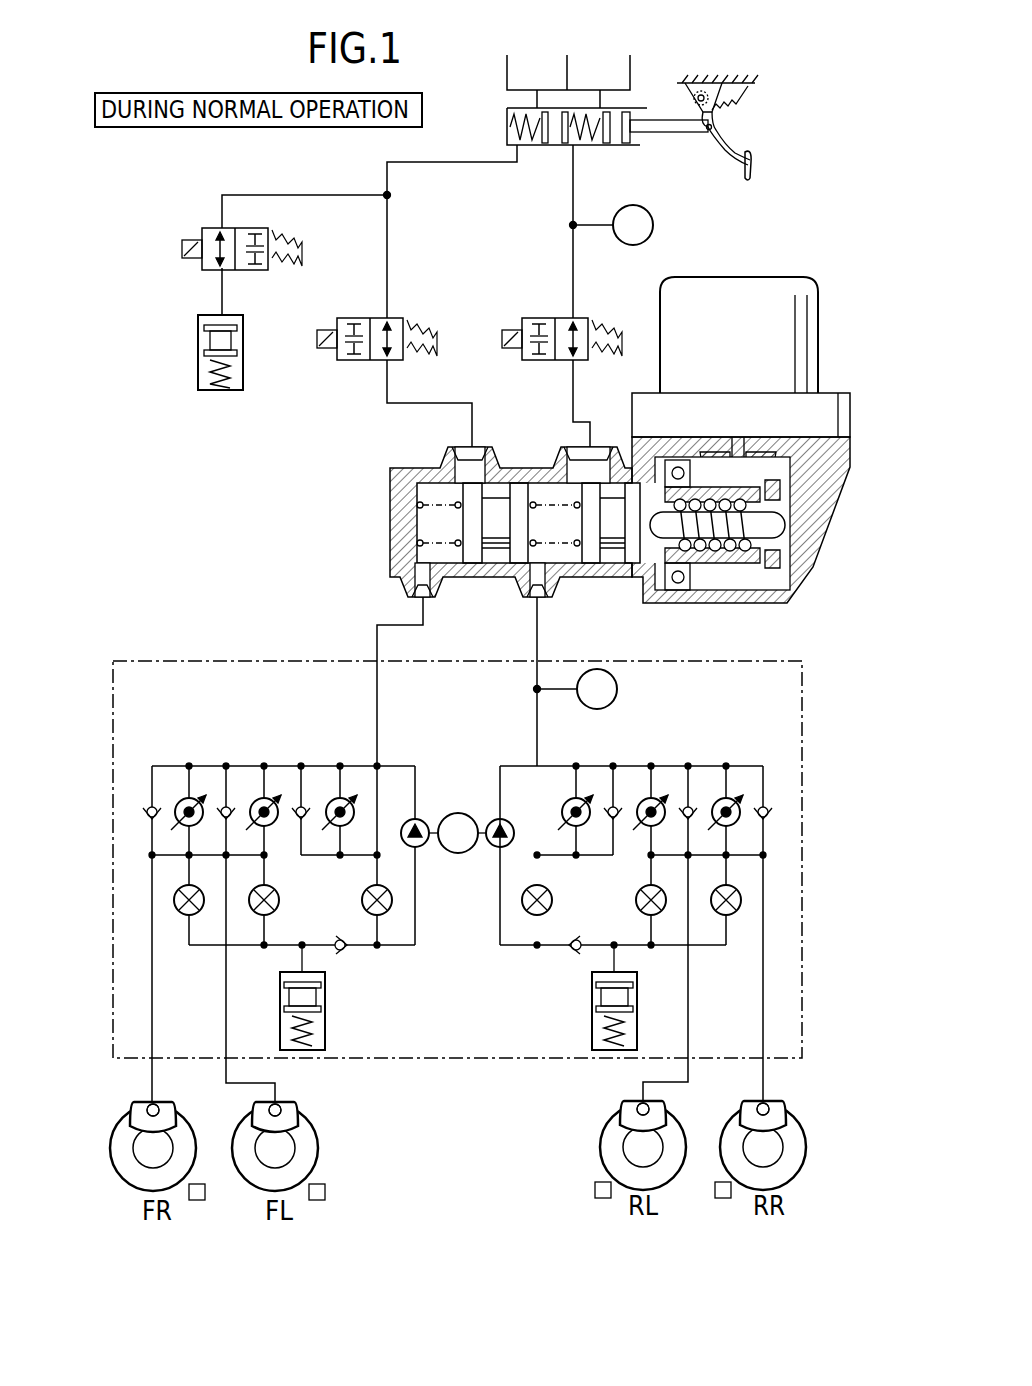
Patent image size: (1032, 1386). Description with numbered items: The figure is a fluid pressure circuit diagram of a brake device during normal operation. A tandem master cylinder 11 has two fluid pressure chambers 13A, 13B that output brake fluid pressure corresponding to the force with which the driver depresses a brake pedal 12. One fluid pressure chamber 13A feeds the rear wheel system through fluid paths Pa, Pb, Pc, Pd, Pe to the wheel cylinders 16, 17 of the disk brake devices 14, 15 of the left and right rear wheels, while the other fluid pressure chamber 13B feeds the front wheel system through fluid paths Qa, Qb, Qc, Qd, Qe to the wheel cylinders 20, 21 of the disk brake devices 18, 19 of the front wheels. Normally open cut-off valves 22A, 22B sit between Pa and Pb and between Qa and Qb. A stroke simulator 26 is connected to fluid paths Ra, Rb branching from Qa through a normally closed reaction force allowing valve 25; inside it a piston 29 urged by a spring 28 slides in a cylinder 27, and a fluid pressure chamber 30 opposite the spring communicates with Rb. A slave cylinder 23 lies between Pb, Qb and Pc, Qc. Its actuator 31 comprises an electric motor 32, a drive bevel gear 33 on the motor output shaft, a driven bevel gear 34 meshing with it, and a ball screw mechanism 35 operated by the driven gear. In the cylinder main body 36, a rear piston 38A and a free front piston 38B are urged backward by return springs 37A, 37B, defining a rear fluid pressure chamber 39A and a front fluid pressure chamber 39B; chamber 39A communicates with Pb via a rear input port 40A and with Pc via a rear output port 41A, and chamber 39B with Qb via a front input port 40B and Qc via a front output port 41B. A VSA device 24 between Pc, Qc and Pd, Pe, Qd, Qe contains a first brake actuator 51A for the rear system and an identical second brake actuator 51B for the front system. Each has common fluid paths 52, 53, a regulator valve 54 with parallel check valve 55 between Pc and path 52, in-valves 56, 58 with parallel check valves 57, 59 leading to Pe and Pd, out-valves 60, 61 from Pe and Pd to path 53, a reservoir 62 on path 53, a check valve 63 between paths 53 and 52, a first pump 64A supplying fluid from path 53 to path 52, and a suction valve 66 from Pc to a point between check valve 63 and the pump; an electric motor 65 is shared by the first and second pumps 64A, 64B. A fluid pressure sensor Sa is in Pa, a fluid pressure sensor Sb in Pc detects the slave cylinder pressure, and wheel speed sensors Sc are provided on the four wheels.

The tandem master cylinder 11 is at (643, 90).
The brake pedal 12 is at (755, 172).
The fluid pressure chamber 13A is at (590, 140).
The fluid pressure chamber 13B is at (530, 140).
The disk brake device 14 is at (601, 1132).
The disk brake device 15 is at (808, 1151).
The wheel cylinder 16 is at (637, 1107).
The wheel cylinder 17 is at (770, 1106).
The disk brake device 18 is at (318, 1150).
The disk brake device 19 is at (111, 1150).
The wheel cylinder 20 is at (284, 1108).
The wheel cylinder 21 is at (147, 1108).
The cut-off valve 22A is at (582, 320).
The cut-off valve 22B is at (397, 320).
The slave cylinder 23 is at (470, 507).
The VSA device 24 is at (178, 660).
The reaction force allowing valve 25 is at (208, 226).
The stroke simulator 26 is at (244, 357).
The cylinder 27 is at (244, 372).
The spring 28 is at (228, 384).
The piston 29 is at (214, 338).
The fluid pressure chamber 30 is at (259, 294).
The actuator 31 is at (770, 580).
The electric motor 32 is at (803, 320).
The drive bevel gear 33 is at (755, 455).
The driven bevel gear 34 is at (718, 575).
The ball screw mechanism 35 is at (697, 560).
The cylinder main body 36 is at (492, 507).
The return spring 37A is at (570, 548).
The return spring 37B is at (415, 545).
The rear piston 38A is at (610, 525).
The front piston 38B is at (495, 525).
The rear fluid pressure chamber 39A is at (556, 490).
The front fluid pressure chamber 39B is at (430, 505).
The rear input port 40A is at (575, 466).
The front input port 40B is at (460, 466).
The rear output port 41A is at (537, 592).
The front output port 41B is at (422, 592).
The first brake actuator 51A is at (676, 885).
The second brake actuator 51B is at (264, 894).
The fluid path 52 is at (218, 765).
The fluid path 53 is at (215, 948).
The regulator valve 54 is at (338, 798).
The check valve 55 is at (300, 802).
The in-valve 56 is at (184, 798).
The check valve 57 is at (148, 806).
The in-valve 58 is at (262, 798).
The check valve 59 is at (225, 802).
The out-valve 60 is at (185, 916).
The out-valve 61 is at (280, 906).
The reservoir 62 is at (325, 1031).
The check valve 63 is at (348, 952).
The first pump 64A is at (492, 848).
The second pump 64B is at (425, 848).
The electric motor 65 is at (458, 812).
The suction valve 66 is at (372, 892).
The fluid path Ra is at (305, 194).
The fluid path Rb is at (222, 279).
The fluid path Qa is at (386, 258).
The fluid path Qb is at (386, 377).
The fluid path Qc is at (376, 636).
The fluid path Qd is at (226, 1073).
The fluid path Qe is at (151, 1076).
The fluid path Pa is at (572, 272).
The fluid path Pb is at (590, 410).
The fluid path Pc is at (545, 626).
The fluid path Pd is at (689, 1070).
The fluid path Pe is at (764, 1073).
The fluid pressure sensor Sa is at (653, 225).
The fluid pressure sensor Sb is at (617, 689).
The wheel speed sensor Sc is at (197, 1200).